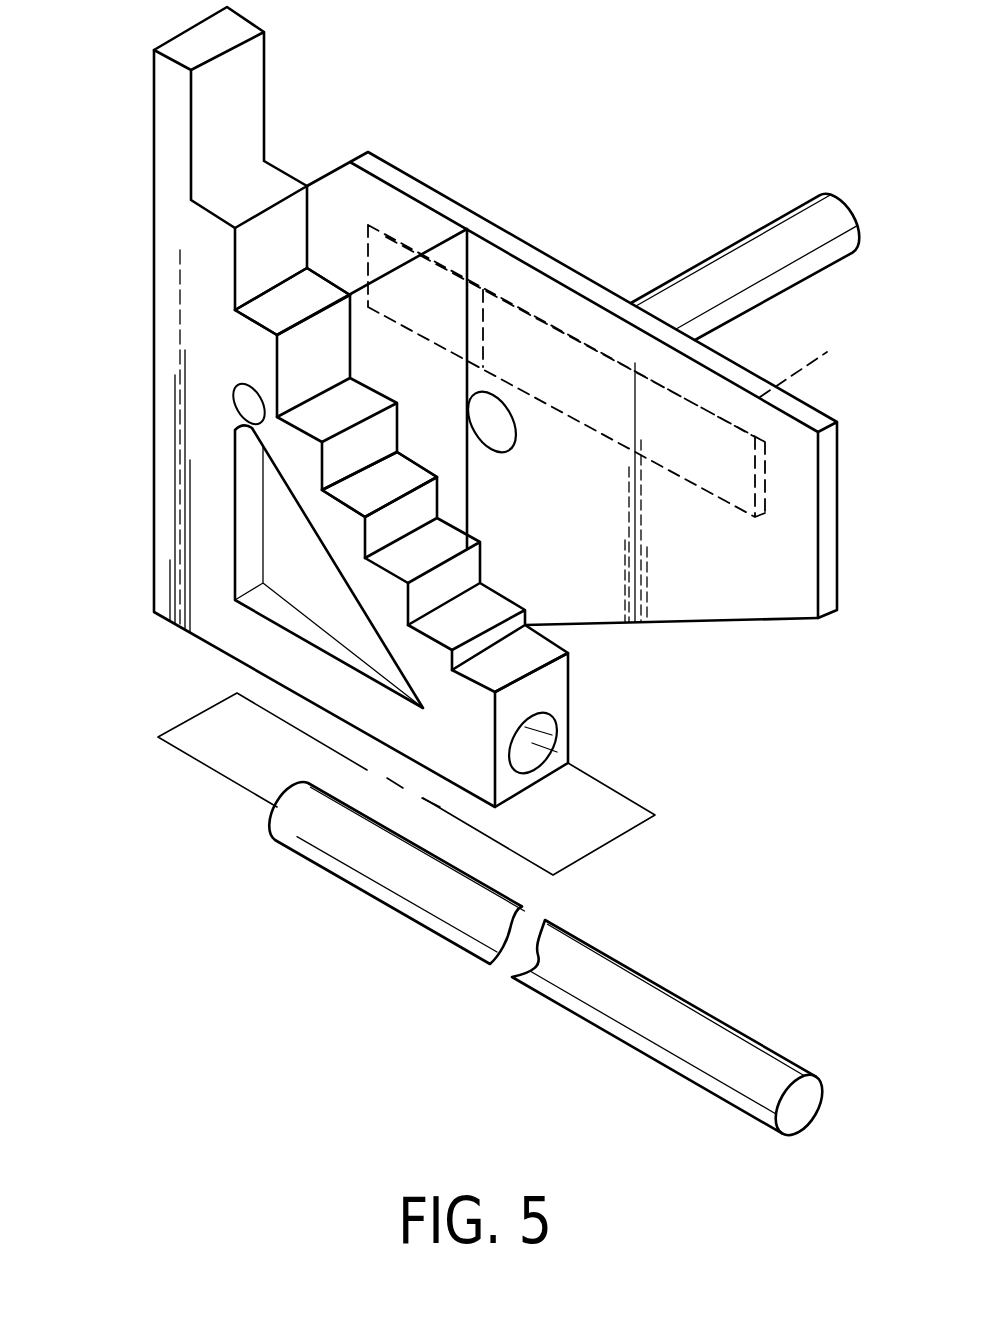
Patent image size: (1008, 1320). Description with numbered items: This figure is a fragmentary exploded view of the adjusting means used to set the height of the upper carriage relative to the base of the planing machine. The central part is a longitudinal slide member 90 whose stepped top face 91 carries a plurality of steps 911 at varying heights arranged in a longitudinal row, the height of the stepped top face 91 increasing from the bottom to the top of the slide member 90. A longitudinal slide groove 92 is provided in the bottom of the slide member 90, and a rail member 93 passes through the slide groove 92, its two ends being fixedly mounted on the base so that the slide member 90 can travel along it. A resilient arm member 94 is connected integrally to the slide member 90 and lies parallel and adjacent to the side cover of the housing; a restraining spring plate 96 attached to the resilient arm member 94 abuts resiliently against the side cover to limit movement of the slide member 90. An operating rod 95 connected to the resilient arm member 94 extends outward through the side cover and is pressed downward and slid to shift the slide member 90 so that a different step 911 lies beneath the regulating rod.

The slide member 90 is at (273, 80).
The stepped top face 91 is at (207, 217).
The steps 911 is at (273, 317).
The slide groove 92 is at (548, 721).
The rail member 93 is at (600, 970).
The resilient arm member 94 is at (805, 497).
The operating rod 95 is at (753, 253).
The restraining spring plate 96 is at (827, 352).